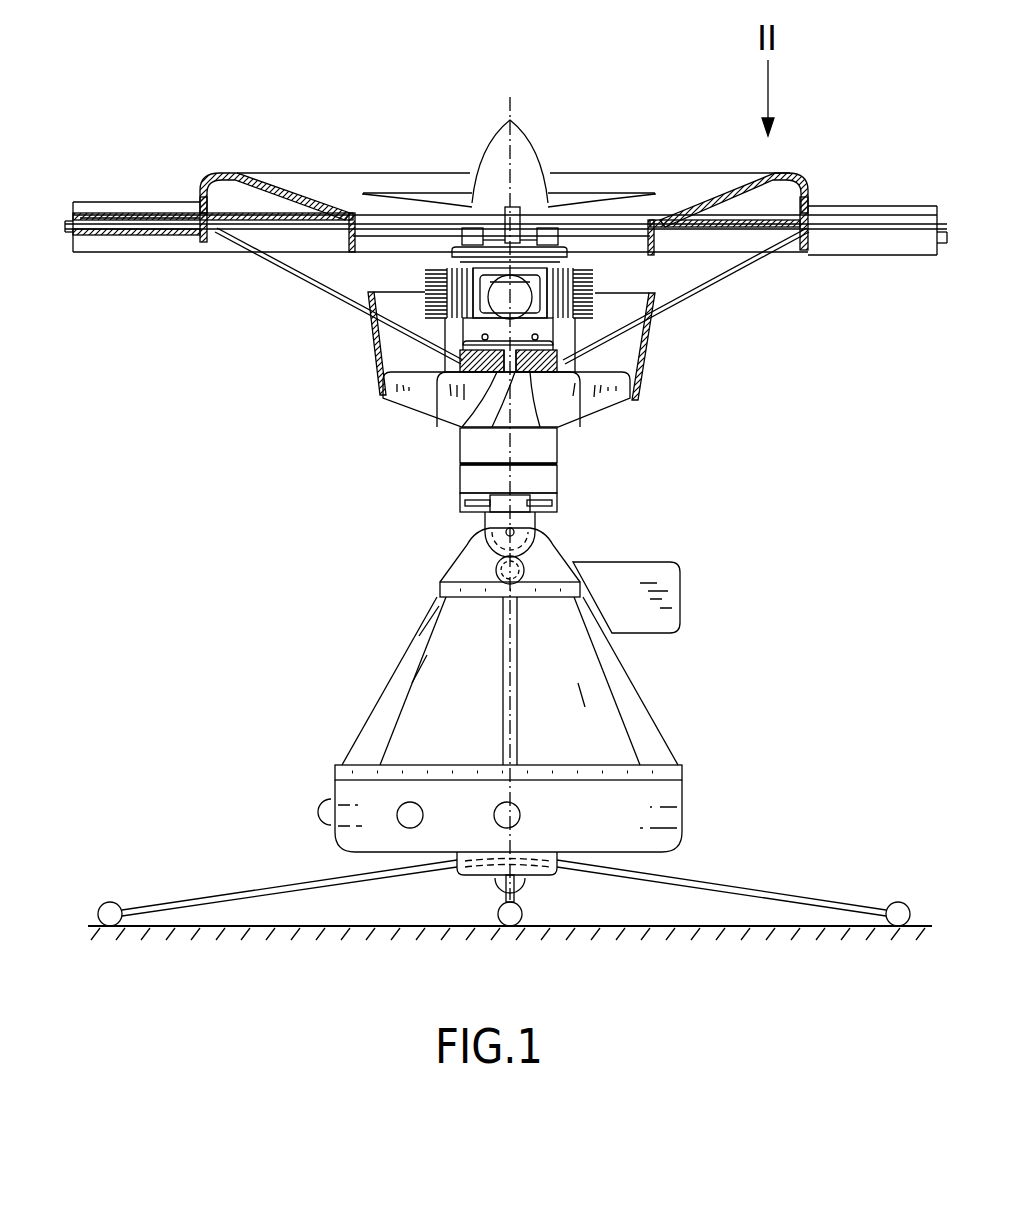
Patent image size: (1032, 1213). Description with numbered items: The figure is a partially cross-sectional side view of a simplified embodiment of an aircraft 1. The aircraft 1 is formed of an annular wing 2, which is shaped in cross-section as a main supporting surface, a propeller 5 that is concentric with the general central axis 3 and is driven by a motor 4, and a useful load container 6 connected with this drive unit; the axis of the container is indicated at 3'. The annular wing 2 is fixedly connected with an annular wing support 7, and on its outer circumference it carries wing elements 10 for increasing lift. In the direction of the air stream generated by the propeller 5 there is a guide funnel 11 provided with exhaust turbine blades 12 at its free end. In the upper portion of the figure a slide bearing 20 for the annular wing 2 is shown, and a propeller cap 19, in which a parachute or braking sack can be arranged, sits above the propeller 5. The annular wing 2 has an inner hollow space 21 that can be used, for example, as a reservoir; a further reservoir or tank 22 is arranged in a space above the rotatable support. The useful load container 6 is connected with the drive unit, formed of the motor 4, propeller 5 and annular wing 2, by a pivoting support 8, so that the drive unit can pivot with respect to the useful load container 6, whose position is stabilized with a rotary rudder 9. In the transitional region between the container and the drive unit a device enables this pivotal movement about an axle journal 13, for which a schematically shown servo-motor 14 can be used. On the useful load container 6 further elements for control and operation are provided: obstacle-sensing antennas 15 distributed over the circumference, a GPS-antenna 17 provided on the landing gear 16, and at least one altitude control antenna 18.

The aircraft 1 is at (814, 518).
The annular wing 2 is at (700, 190).
The general central axis 3 is at (531, 320).
The fuselage axis 3' is at (531, 748).
The motor 4 is at (597, 276).
The propeller 5 is at (585, 195).
The useful load container 6 is at (455, 625).
The annular wing support 7 is at (315, 287).
The pivoting support 8 is at (468, 482).
The rotary rudder 9 is at (665, 620).
The wing elements 10 is at (142, 212).
The guide funnel 11 is at (648, 333).
The exhaust turbine blades 12 is at (393, 385).
The axle journal 13 is at (487, 522).
The servo-motor 14 is at (498, 572).
The obstacle-sensing antennas 15 is at (495, 812).
The landing gear 16 is at (755, 890).
The GPS-antenna 17 is at (900, 903).
The altitude control antenna 18 is at (520, 884).
The propeller cap 19 is at (495, 140).
The slide bearing 20 is at (467, 228).
The inner hollow space 21 is at (242, 190).
The tank 22 is at (468, 446).